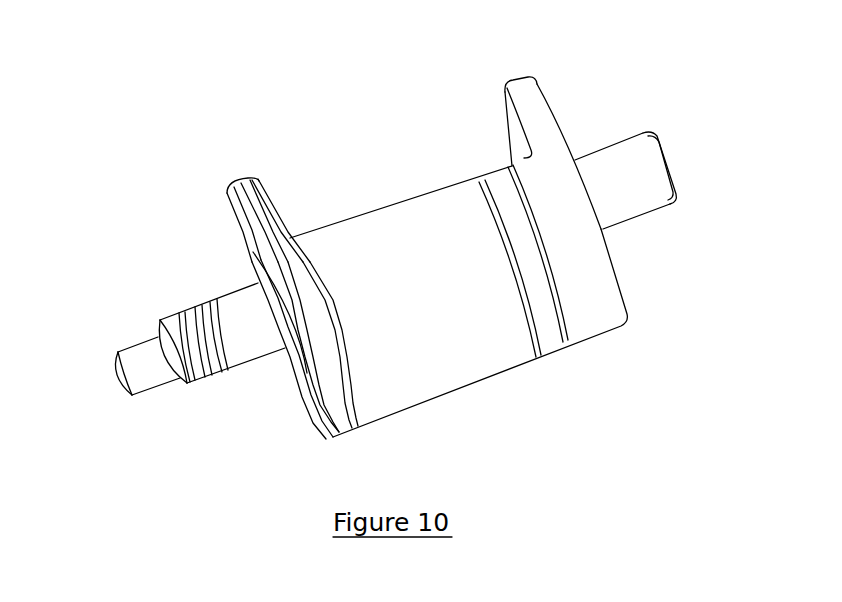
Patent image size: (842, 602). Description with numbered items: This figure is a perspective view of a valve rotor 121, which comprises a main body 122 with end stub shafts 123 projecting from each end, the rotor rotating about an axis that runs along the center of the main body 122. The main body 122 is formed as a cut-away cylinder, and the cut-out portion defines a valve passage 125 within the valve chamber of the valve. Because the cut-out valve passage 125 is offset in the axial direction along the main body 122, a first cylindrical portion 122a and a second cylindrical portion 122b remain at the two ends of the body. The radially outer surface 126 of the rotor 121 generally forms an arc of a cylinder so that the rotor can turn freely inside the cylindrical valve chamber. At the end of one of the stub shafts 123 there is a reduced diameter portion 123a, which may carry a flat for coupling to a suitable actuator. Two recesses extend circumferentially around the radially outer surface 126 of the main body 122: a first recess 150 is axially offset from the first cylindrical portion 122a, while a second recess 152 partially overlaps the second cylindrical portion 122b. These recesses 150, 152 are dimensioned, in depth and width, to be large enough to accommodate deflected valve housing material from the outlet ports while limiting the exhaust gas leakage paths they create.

The valve rotor 121 is at (612, 370).
The main body 122 is at (398, 386).
The first cylindrical portion 122a is at (521, 82).
The second cylindrical portion 122b is at (237, 192).
The end stub shafts 123 is at (635, 148).
The reduced diameter portion 123a is at (140, 356).
The valve passage 125 is at (384, 166).
The radially outer surface 126 is at (470, 360).
The first recess 150 is at (500, 187).
The second recess 152 is at (292, 250).